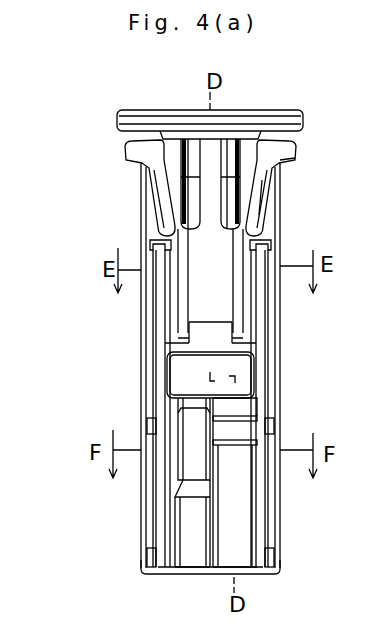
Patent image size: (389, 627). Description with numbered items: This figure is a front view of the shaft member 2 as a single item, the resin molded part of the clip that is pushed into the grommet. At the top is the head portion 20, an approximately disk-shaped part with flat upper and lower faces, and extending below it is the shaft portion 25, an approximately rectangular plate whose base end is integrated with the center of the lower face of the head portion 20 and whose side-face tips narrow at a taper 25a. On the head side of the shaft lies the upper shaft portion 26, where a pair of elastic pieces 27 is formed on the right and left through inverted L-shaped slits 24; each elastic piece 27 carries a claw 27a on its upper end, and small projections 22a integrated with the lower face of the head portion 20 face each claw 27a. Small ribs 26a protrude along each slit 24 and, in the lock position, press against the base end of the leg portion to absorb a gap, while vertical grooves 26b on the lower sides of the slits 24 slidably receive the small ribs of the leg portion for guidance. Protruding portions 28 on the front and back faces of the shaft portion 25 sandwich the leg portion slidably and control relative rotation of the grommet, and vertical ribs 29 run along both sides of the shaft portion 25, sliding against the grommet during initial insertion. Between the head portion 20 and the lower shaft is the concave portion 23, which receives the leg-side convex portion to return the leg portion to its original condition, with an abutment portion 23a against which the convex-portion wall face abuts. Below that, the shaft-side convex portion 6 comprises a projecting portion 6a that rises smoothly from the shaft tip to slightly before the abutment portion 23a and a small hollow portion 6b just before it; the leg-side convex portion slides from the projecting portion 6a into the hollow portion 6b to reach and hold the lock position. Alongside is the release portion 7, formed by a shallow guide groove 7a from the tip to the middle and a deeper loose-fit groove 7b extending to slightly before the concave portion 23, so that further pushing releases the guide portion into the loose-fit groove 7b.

The shaft member 2 is at (58, 137).
The head portion 20 is at (120, 121).
The small projection 22a is at (257, 140).
The concave portion 23 is at (176, 368).
The abutment portion 23a is at (262, 406).
The inverted L-shaped slit 24 is at (262, 205).
The shaft portion 25 is at (140, 226).
The taper 25a is at (145, 553).
The upper shaft portion 26 is at (234, 258).
The small rib 26a is at (216, 141).
The vertical groove 26b is at (168, 250).
The elastic piece 27 is at (286, 182).
The claw 27a is at (291, 149).
The protruding portion 28 is at (162, 323).
The vertical rib 29 is at (140, 406).
The shaft-side convex portion 6 is at (335, 482).
The projecting portion 6a is at (238, 488).
The small hollow portion 6b is at (243, 433).
The release portion 7 is at (90, 490).
The guide groove 7a is at (190, 513).
The loose-fit groove 7b is at (193, 463).